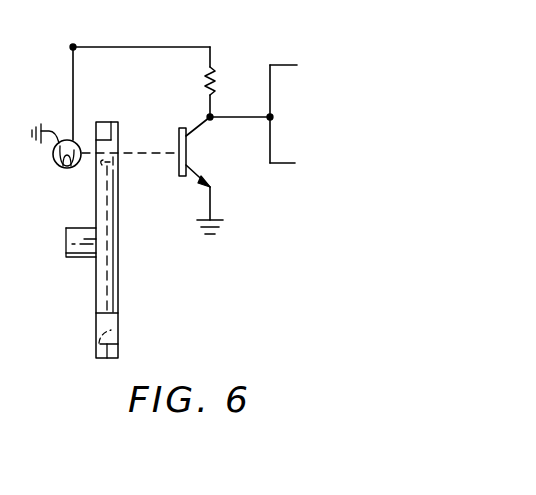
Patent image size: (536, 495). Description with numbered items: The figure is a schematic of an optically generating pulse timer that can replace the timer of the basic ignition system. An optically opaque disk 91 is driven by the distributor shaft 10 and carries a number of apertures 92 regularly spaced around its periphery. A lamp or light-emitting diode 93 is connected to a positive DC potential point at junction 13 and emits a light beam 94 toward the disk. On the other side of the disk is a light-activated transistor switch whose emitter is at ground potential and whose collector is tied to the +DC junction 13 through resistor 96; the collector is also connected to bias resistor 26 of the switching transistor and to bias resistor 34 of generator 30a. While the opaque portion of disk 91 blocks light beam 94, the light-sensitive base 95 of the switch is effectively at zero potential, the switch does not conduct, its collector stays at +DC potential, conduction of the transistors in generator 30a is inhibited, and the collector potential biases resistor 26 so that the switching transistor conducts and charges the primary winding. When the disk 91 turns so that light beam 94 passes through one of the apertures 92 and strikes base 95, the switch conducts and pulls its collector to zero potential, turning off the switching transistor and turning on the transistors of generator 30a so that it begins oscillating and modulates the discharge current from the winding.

The distributor shaft 10 is at (67, 229).
The +DC junction 13 is at (88, 32).
The bias resistor 26 is at (305, 52).
The bias resistor 34 is at (288, 185).
The generator 30a is at (343, 180).
The optically opaque disk 91 is at (96, 297).
The apertures 92 is at (119, 160).
The lamp or light-emitting diode 93 is at (58, 164).
The light beam 94 is at (148, 152).
The light-sensitive base 95 is at (182, 177).
The resistor 96 is at (208, 77).